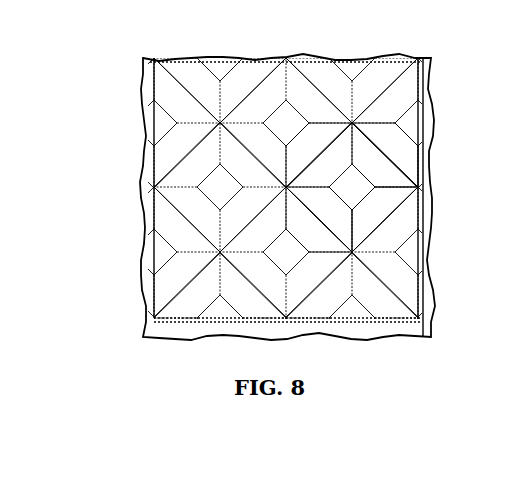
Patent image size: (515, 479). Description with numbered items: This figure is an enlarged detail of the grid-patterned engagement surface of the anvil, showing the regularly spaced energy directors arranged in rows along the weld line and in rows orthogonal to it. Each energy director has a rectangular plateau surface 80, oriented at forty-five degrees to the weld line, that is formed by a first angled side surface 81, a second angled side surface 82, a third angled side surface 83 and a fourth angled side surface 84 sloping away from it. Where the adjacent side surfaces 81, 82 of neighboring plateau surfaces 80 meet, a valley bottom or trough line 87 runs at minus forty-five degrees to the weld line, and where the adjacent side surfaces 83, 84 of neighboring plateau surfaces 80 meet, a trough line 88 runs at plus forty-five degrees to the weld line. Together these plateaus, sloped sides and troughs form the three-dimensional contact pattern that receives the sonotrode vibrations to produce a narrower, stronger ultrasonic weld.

The plateau surface 80 is at (283, 117).
The first angled side surface 81 is at (373, 157).
The second angled side surface 82 is at (332, 213).
The third angled side surface 83 is at (313, 140).
The fourth angled side surface 84 is at (377, 128).
The trough line 87 is at (405, 295).
The trough line 88 is at (388, 80).